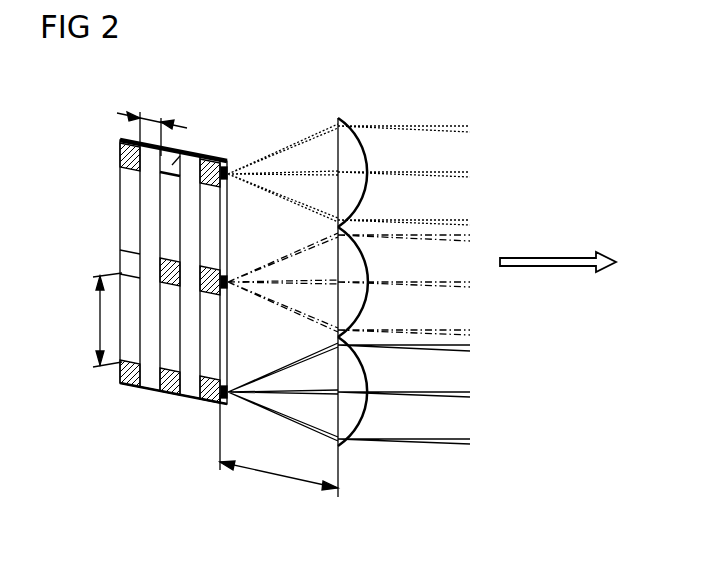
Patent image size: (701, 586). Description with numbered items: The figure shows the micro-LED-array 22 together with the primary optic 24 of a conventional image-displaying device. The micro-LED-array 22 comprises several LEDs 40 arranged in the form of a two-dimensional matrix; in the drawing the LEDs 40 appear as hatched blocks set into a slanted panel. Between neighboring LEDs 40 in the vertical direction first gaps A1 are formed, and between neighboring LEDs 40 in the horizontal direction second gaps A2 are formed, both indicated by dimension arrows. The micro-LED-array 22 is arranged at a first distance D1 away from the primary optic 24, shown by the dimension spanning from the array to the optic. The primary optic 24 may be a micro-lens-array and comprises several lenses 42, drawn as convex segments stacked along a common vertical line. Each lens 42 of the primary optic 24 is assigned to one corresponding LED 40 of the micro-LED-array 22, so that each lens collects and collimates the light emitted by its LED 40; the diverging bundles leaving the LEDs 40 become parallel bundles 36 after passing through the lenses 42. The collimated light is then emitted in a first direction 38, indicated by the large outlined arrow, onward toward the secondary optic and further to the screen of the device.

The micro-LED-array 22 is at (112, 191).
The LED 40 is at (128, 153).
The primary optic 24 is at (348, 268).
The fourth lens 42 is at (350, 130).
The emitted light beams 36 is at (452, 105).
The first direction 38 is at (548, 268).
The first gap A1 is at (100, 322).
The second gap A2 is at (150, 112).
The first distance D1 is at (277, 478).